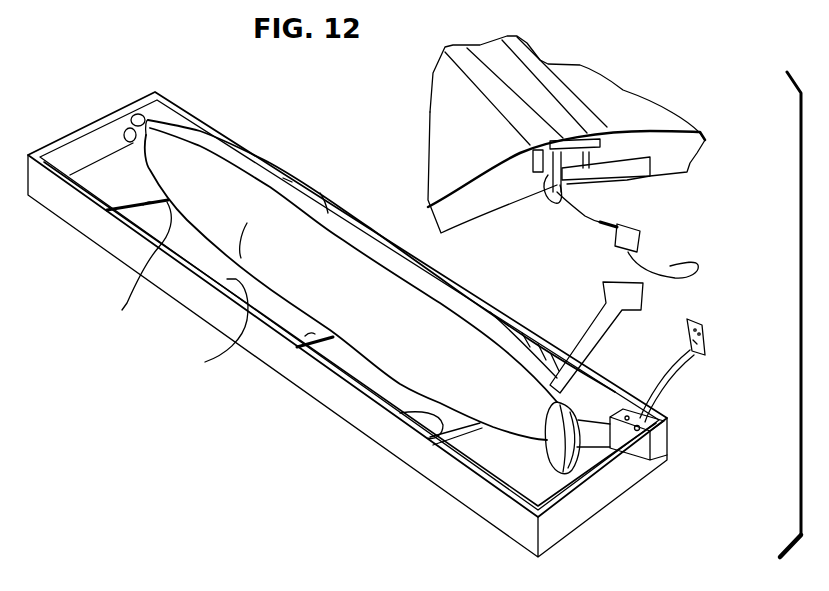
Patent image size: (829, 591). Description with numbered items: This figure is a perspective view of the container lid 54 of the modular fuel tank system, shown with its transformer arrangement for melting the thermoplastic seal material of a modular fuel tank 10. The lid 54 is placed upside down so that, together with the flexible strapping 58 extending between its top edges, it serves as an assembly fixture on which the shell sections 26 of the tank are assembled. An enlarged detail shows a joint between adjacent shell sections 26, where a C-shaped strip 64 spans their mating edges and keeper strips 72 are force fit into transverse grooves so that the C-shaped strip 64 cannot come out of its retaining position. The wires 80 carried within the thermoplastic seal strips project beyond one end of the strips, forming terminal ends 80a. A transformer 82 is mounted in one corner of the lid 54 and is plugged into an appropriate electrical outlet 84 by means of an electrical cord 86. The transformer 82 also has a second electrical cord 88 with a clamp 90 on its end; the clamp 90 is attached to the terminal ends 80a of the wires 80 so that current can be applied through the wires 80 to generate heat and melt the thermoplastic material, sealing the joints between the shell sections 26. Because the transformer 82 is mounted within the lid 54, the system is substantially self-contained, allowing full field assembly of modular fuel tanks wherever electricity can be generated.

The modular fuel tank 10 is at (283, 146).
The shell sections 26 is at (283, 230).
The lid 54 is at (207, 362).
The flexible strapping 58 is at (123, 310).
The C-shaped strip 64 is at (627, 87).
The keeper strips 72 is at (532, 147).
The wires 80 is at (615, 168).
The terminal ends of wires 80a is at (572, 195).
The transformer 82 is at (667, 453).
The electrical outlet 84 is at (700, 323).
The electrical cord 86 is at (678, 356).
The electrical cord 88 is at (698, 266).
The clamp 90 is at (623, 217).